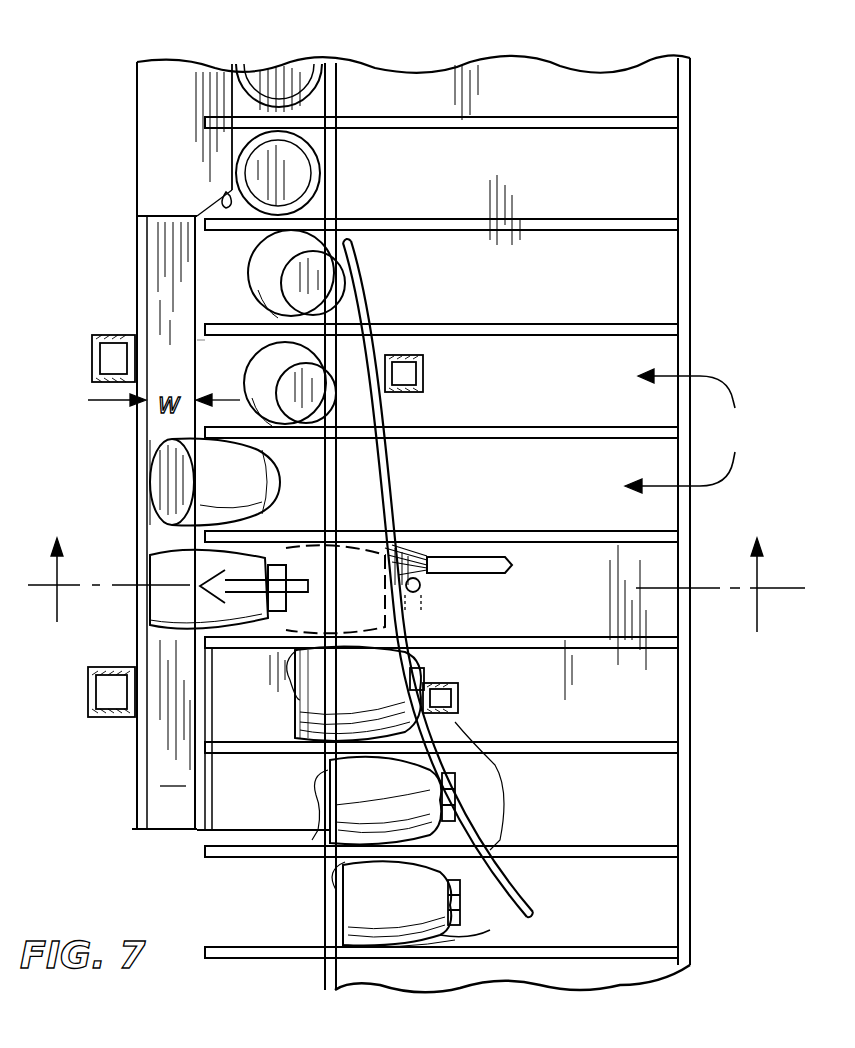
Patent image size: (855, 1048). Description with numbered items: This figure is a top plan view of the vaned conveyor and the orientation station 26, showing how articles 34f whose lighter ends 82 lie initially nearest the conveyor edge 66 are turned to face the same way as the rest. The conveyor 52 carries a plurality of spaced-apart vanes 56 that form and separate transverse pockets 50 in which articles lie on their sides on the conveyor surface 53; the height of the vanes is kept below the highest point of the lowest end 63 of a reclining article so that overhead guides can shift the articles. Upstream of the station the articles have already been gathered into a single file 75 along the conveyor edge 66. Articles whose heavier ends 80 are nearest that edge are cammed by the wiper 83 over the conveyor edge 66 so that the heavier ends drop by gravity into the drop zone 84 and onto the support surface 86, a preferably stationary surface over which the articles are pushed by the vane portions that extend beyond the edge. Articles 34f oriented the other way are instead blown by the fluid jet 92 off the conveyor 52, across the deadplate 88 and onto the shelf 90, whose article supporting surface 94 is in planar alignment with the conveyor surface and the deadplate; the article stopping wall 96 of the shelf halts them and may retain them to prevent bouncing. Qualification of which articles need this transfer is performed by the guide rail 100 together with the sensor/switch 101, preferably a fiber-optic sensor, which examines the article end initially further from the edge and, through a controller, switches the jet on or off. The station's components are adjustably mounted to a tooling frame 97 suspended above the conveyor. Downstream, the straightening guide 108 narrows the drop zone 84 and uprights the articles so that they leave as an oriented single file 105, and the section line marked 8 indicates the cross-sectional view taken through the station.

The oriented single file 105 is at (271, 62).
The straightening guide 108 is at (222, 200).
The conveyor edge 66 is at (337, 190).
The vanes 56 is at (592, 130).
The conveyor 52 is at (692, 282).
The conveyor surface 53 is at (645, 800).
The drop zone 84 is at (233, 358).
The support surface 86 is at (245, 312).
The tooling frame 97 is at (92, 362).
The wiper 83 is at (386, 478).
The pockets 50 is at (685, 431).
The section line 8 is at (416, 569).
The article stopping wall 96 is at (152, 530).
The articles 34f is at (242, 500).
The heavier ends 80 is at (268, 488).
The fluid jet 92 is at (490, 572).
The sensor/switch 101 is at (420, 592).
The shelf 90 is at (137, 641).
The orientation station 26 is at (130, 760).
The article supporting surface 94 is at (172, 773).
The lighter ends 82 is at (322, 702).
The deadplate 88 is at (232, 818).
The guide rail 100 is at (540, 880).
The lowest end 63 is at (495, 930).
The single file 75 is at (400, 930).